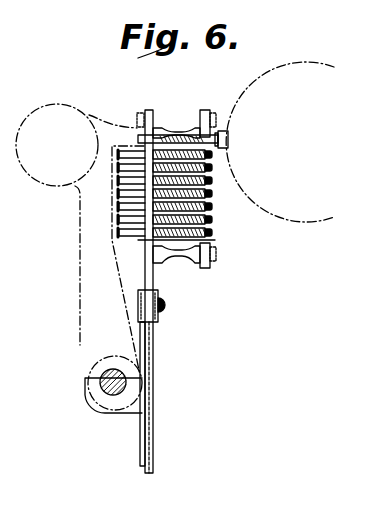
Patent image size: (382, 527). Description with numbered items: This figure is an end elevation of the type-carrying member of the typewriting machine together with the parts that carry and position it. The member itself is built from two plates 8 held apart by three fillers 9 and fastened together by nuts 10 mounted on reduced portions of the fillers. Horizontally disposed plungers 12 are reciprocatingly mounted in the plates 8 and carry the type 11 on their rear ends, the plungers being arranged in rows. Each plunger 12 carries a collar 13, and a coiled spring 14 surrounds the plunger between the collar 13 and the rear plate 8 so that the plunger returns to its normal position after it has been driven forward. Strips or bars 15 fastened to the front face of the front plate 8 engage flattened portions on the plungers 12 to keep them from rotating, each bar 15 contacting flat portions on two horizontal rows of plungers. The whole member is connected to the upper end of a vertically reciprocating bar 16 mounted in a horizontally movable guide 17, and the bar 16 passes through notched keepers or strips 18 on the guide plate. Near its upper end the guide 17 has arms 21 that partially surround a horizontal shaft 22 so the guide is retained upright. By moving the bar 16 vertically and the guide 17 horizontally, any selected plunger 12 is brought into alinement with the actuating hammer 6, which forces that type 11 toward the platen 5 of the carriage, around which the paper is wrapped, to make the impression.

The platen 5 is at (290, 222).
The actuating hammer 6 is at (32, 172).
The plates 8 is at (203, 263).
The fillers 9 is at (162, 117).
The nuts 10 is at (138, 120).
The type 11 is at (212, 220).
The plungers 12 is at (126, 213).
The collar 13 is at (165, 137).
The coiled spring 14 is at (222, 133).
The strips or bars 15 is at (143, 148).
The vertically reciprocating bar 16 is at (153, 363).
The guide 17 is at (140, 427).
The notched keepers or strips 18 is at (158, 318).
The arms 21 is at (95, 393).
The horizontal shaft 22 is at (105, 372).